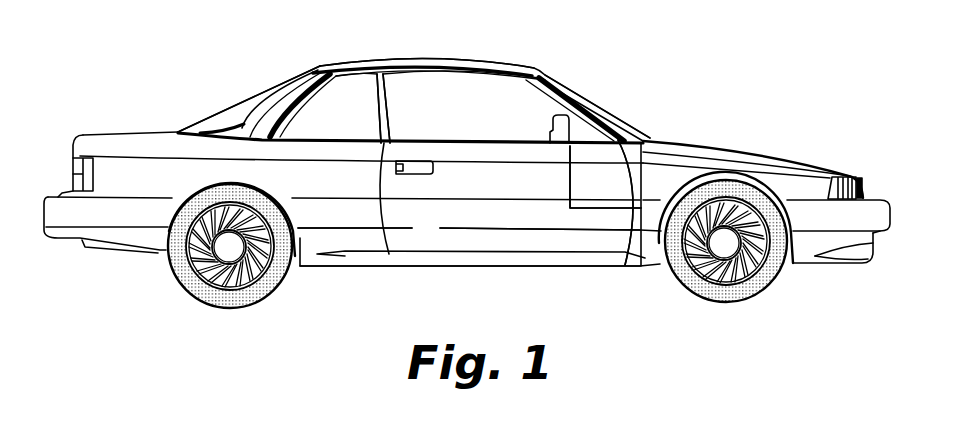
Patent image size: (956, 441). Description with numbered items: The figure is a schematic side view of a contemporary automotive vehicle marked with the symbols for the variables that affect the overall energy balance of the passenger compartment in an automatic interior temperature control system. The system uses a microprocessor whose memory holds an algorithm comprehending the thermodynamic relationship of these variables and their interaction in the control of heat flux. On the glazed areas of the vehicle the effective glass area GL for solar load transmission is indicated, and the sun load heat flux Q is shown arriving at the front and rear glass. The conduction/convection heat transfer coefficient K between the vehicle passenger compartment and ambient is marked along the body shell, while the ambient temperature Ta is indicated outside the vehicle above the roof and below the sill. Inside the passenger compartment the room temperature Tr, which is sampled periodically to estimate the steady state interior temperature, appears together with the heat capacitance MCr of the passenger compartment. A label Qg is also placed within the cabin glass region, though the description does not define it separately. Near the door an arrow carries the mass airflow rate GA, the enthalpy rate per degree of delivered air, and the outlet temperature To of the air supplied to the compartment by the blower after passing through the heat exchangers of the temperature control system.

The sun load heat flux Q is at (247, 96).
The conduction/convection heat transfer coefficient K is at (287, 105).
The effective glass area GL is at (233, 113).
The ambient temperature Ta is at (470, 164).
The room temperature Tr is at (422, 83).
The rear side window Qg is at (379, 101).
The heat capacitance in the vehicle passenger compartment MCr is at (461, 101).
The mass airflow rate GA is at (582, 185).
The outlet temperature To is at (550, 185).